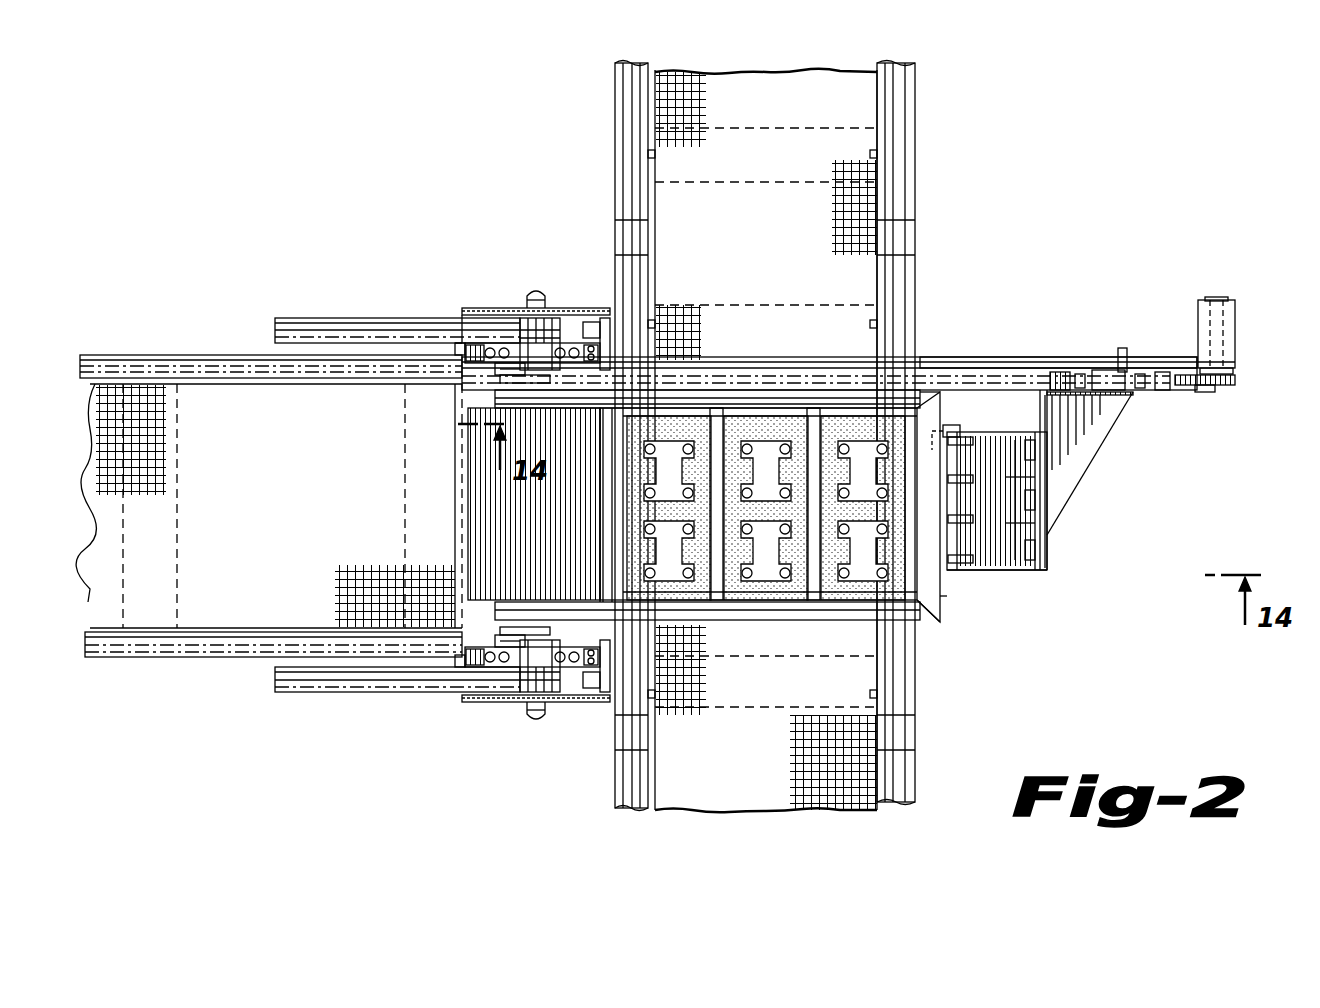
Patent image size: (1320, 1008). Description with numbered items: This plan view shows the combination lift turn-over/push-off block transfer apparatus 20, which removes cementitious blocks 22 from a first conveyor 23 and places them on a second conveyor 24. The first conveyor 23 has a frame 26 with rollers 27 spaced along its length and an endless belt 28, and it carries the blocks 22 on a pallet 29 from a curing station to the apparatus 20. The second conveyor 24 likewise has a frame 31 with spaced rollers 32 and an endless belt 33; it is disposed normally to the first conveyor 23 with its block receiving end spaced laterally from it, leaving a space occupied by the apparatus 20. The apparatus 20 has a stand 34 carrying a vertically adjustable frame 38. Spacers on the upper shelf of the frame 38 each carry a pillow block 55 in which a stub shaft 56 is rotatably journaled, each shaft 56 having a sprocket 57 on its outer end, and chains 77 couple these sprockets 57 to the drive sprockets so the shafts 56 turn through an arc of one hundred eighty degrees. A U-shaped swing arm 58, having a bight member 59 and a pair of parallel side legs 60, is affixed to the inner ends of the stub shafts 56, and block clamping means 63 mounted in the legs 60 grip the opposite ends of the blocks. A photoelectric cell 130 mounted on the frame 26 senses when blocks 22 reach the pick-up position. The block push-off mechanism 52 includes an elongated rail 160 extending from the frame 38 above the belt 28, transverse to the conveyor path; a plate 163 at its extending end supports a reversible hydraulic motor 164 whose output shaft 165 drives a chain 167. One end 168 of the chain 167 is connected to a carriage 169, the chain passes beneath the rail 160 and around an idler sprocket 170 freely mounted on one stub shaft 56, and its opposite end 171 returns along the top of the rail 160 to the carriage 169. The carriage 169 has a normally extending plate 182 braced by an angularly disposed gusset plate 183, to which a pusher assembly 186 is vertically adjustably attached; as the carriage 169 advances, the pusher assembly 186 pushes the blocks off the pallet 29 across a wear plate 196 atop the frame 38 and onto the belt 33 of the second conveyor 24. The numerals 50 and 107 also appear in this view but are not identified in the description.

The block transfer apparatus 20 is at (508, 292).
The cementitious blocks 22 is at (832, 592).
The first conveyor 23 is at (922, 163).
The second conveyor 24 is at (148, 355).
The frame 26 is at (617, 112).
The rollers 27 is at (835, 127).
The endless belt 28 is at (790, 70).
The pallet 29 is at (615, 505).
The frame 31 is at (208, 655).
The rollers 32 is at (88, 428).
The endless belt 33 is at (95, 490).
The stand 34 is at (400, 693).
The frame 38 is at (488, 615).
The carriage assembly 50 is at (962, 640).
The block push-off mechanism 52 is at (1112, 441).
The pillow block 55 is at (515, 374).
The stub shafts 56 is at (520, 350).
The sprocket 57 is at (495, 308).
The U-shaped swing arm 58 is at (945, 612).
The bight member 59 is at (945, 600).
The side legs 60 is at (803, 365).
The block clamping means 63 is at (630, 582).
The chains 77 is at (593, 318).
The adjusting nut 107 is at (538, 292).
The photoelectric cell 130 is at (955, 432).
The elongated rail 160 is at (975, 338).
The plate 163 is at (1236, 370).
The reversible hydraulic motor 164 is at (1236, 328).
The output shaft 165 is at (1215, 392).
The chain 167 is at (1236, 382).
The chain end 168 is at (1175, 392).
The carriage 169 is at (1100, 370).
The idler sprocket 170 is at (545, 398).
The opposite chain end 171 is at (1045, 370).
The normally extending plate 182 is at (1048, 505).
The gusset plate 183 is at (1082, 462).
The pusher assembly 186 is at (1032, 573).
The wear plate 196 is at (440, 562).